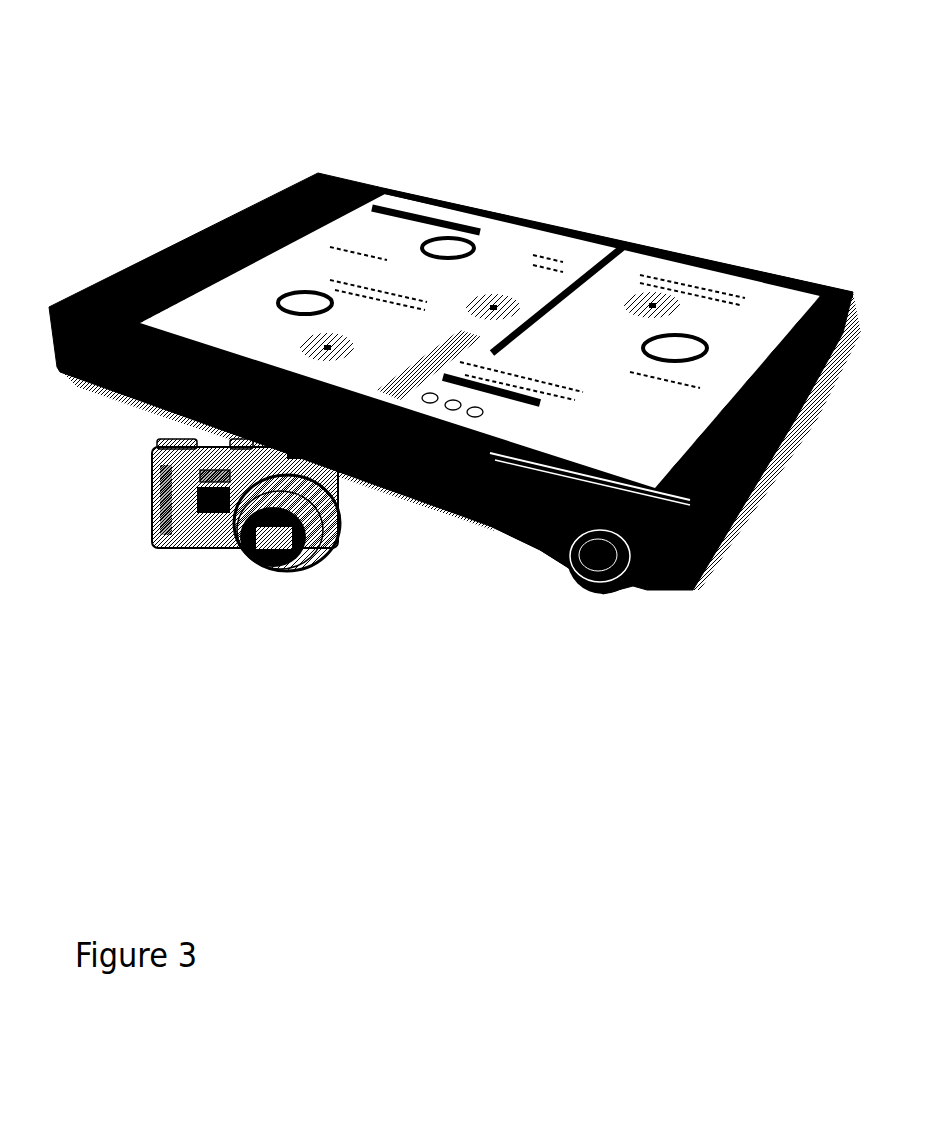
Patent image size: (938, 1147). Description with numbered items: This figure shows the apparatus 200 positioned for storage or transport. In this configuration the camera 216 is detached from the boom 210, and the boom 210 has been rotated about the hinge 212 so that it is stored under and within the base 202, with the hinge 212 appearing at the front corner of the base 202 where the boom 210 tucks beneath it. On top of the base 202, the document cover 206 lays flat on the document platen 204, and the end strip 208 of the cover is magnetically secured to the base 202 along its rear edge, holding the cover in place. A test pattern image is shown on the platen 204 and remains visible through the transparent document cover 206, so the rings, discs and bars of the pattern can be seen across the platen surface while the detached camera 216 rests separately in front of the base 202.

The apparatus 200 is at (122, 62).
The base 202 is at (135, 400).
The document platen 204 is at (635, 283).
The document cover 206 is at (448, 213).
The end strip 208 is at (382, 185).
The boom 210 is at (533, 542).
The hinge 212 is at (593, 590).
The camera 216 is at (230, 568).